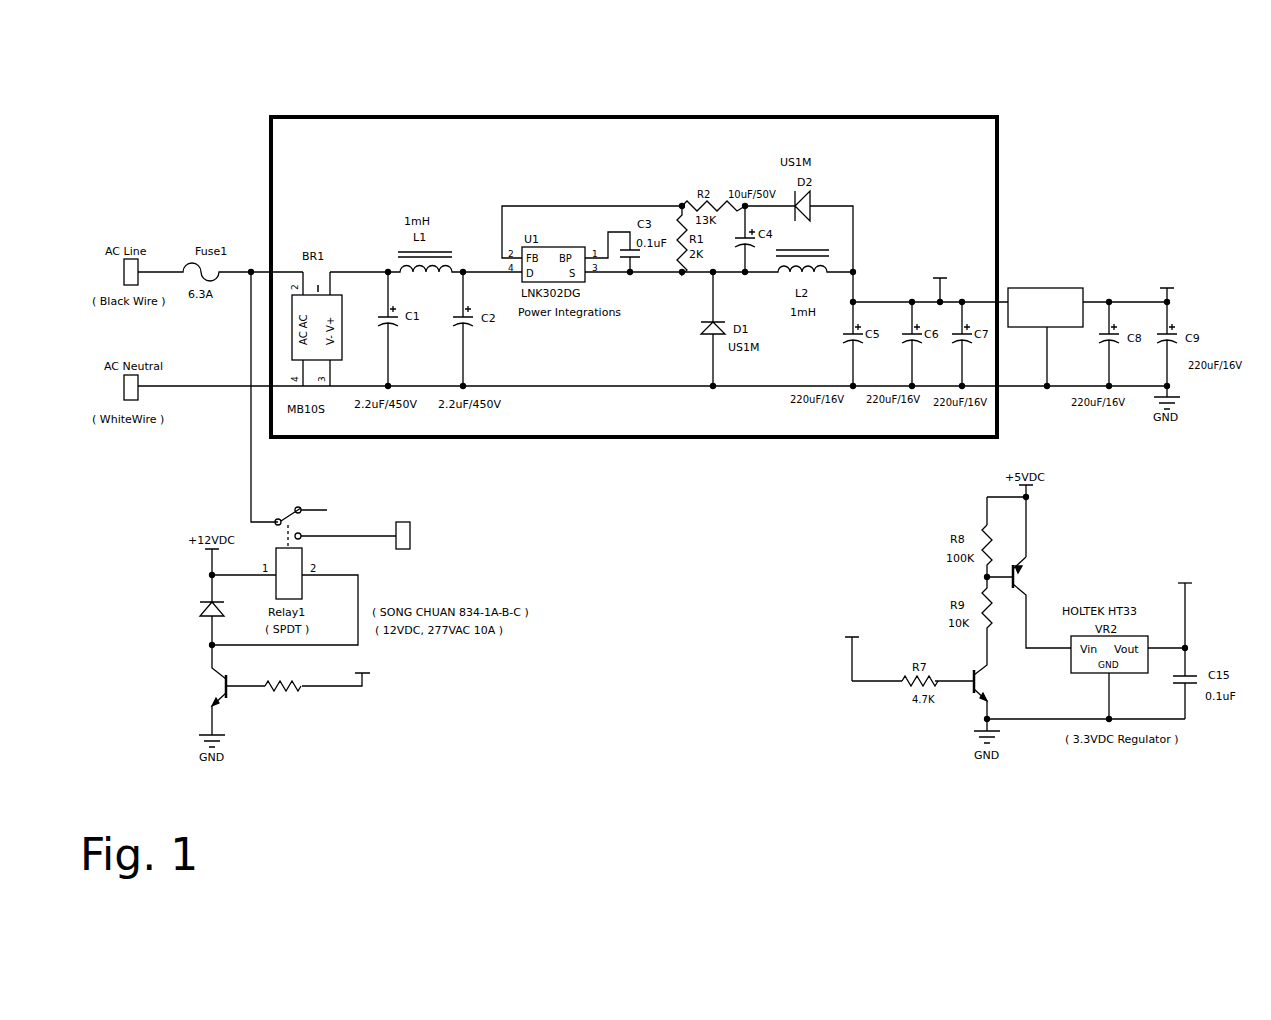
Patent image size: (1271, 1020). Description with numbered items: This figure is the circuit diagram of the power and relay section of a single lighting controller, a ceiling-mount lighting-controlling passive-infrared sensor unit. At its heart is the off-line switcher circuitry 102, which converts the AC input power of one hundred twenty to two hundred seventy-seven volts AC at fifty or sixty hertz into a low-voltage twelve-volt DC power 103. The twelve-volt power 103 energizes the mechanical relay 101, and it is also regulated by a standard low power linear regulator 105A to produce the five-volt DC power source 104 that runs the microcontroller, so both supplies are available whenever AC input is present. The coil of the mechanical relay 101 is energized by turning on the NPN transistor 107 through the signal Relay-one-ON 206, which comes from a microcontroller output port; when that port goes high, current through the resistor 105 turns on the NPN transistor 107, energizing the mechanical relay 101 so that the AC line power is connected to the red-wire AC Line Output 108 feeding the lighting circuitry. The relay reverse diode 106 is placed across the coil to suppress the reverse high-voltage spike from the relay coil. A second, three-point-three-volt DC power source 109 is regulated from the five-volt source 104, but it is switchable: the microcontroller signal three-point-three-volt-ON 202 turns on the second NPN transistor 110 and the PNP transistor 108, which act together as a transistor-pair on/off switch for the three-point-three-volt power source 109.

The mechanical relay 101 is at (322, 495).
The off-line switcher circuitry 102 is at (853, 110).
The +12 VDC power 103 is at (940, 253).
The +5 VDC power source 104 is at (1172, 268).
The resistor R3 105 is at (275, 672).
The standard low power 5 VDC linear regulator 105A is at (1062, 228).
The relay reverse diode D3 106 is at (160, 593).
The NPN transistor Q1 107 is at (168, 676).
The AC Line Output1 / PNP transistor Q4 108 is at (465, 497).
The +3.3 VDC power source 109 is at (1195, 562).
The NPN transistor Q3 110 is at (1018, 683).
The 3.3V-ON 202 is at (832, 617).
The Relay1-ON 206 is at (397, 665).